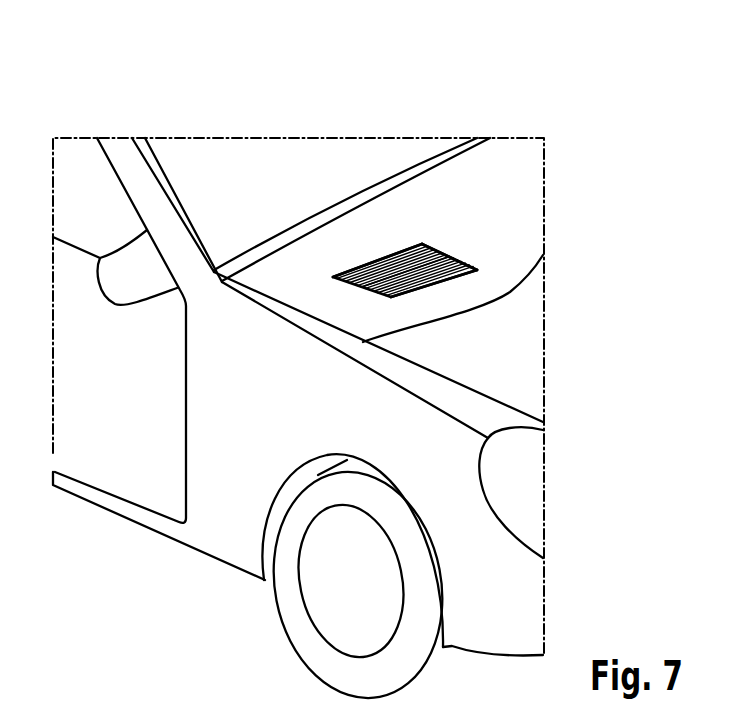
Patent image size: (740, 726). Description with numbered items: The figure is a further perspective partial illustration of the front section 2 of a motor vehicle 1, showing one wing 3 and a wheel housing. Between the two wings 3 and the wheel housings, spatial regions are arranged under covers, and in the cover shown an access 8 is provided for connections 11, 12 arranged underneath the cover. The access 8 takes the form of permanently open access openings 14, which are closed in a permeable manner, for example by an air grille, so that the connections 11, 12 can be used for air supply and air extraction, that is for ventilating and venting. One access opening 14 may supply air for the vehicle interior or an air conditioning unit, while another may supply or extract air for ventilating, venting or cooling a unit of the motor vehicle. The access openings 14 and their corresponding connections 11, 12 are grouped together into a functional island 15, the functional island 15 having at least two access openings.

The motor vehicle 1 is at (212, 100).
The motor vehicle front section 2 is at (578, 352).
The wing 3 is at (412, 378).
The access 8 is at (425, 230).
The connection 11 is at (442, 270).
The connection 12 is at (367, 269).
The permanently open access opening 14 is at (393, 252).
The functional island 15 is at (439, 290).